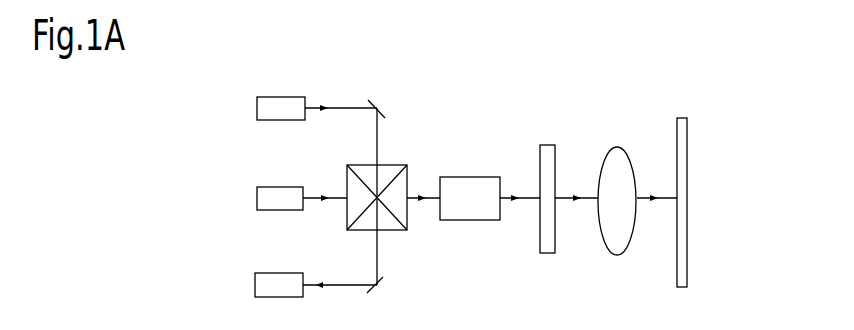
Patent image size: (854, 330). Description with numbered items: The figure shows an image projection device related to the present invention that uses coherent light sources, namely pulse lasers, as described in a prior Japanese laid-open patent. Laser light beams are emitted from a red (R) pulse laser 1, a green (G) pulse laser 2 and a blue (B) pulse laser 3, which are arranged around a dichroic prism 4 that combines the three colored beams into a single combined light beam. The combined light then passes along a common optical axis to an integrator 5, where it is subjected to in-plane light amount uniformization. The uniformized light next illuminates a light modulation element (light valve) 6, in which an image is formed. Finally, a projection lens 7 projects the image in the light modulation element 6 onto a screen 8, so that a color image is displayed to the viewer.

The red (R) pulse laser 1 is at (304, 99).
The green (G) pulse laser 2 is at (302, 189).
The blue (B) pulse laser 3 is at (300, 278).
The dichroic prism 4 is at (409, 162).
The integrator 5 is at (463, 224).
The light modulation element (light valve) 6 is at (548, 148).
The projection lens 7 is at (619, 256).
The screen 8 is at (672, 123).